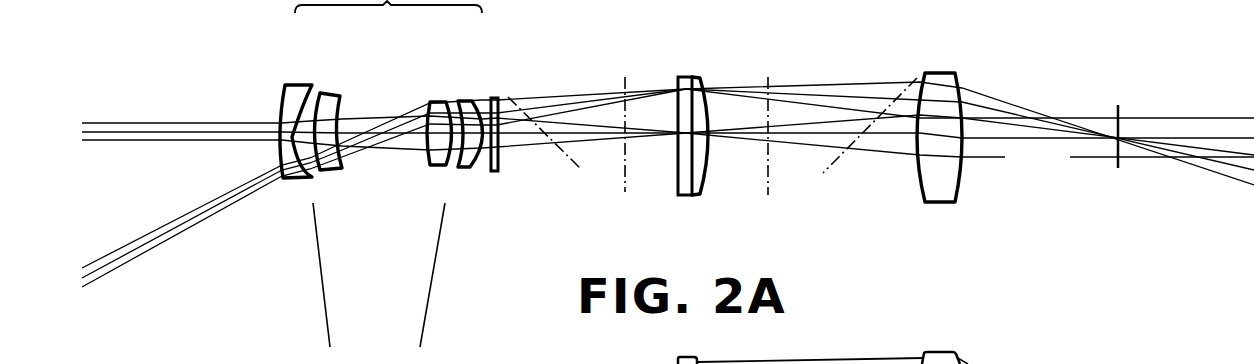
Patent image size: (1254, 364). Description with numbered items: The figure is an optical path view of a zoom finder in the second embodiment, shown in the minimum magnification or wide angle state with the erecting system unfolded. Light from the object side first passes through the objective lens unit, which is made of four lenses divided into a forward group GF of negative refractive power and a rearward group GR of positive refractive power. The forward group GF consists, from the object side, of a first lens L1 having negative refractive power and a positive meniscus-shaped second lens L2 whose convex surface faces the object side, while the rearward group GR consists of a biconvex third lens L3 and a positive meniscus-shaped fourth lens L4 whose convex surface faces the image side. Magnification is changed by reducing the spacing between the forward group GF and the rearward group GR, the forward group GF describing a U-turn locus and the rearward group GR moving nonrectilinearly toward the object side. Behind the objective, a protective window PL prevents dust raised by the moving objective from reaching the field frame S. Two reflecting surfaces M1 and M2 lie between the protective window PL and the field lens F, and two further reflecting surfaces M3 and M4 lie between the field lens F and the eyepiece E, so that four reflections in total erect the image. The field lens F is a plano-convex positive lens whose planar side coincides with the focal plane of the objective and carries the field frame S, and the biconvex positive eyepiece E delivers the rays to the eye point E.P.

The forward group GF is at (360, 60).
The rearward group GR is at (488, 60).
The first lens L1 is at (290, 178).
The second lens L2 is at (337, 170).
The third lens L3 is at (442, 170).
The fourth lens L4 is at (470, 170).
The protective window PL is at (497, 90).
The first reflecting surface M1 is at (570, 160).
The second reflecting surface M2 is at (623, 182).
The third reflecting surface M3 is at (767, 182).
The fourth reflecting surface M4 is at (837, 168).
The field frame S is at (678, 77).
The field lens F is at (688, 77).
The eyepiece E is at (938, 73).
The eye point E.P. is at (1118, 105).